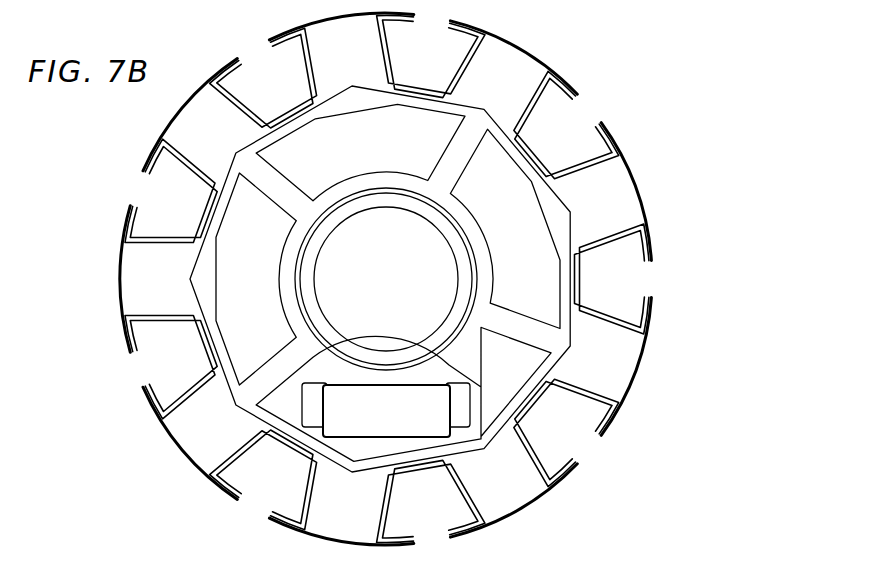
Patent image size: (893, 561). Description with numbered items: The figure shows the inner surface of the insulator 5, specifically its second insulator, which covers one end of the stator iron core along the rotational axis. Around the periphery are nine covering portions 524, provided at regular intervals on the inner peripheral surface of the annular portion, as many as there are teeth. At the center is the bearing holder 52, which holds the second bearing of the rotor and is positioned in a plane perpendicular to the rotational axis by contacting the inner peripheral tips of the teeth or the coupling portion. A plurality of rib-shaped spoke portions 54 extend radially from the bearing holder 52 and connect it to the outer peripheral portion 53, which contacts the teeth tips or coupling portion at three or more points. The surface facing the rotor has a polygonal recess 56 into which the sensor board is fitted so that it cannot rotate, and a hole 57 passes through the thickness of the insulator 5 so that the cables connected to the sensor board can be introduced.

The insulator 5 is at (630, 96).
The bearing holder 52 is at (390, 232).
The outer peripheral portion 53 is at (620, 194).
The covering portion 524 is at (236, 106).
The spoke portion 54 is at (284, 185).
The recess 56 is at (566, 338).
The hole 57 is at (432, 424).